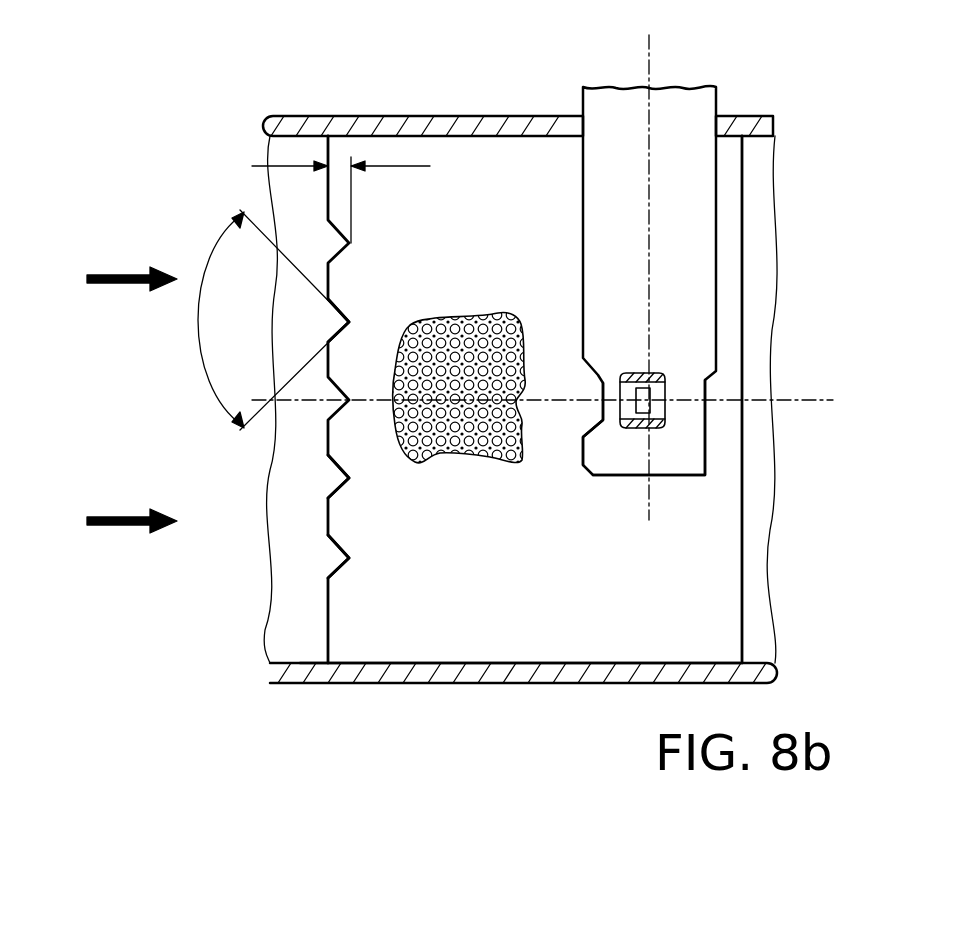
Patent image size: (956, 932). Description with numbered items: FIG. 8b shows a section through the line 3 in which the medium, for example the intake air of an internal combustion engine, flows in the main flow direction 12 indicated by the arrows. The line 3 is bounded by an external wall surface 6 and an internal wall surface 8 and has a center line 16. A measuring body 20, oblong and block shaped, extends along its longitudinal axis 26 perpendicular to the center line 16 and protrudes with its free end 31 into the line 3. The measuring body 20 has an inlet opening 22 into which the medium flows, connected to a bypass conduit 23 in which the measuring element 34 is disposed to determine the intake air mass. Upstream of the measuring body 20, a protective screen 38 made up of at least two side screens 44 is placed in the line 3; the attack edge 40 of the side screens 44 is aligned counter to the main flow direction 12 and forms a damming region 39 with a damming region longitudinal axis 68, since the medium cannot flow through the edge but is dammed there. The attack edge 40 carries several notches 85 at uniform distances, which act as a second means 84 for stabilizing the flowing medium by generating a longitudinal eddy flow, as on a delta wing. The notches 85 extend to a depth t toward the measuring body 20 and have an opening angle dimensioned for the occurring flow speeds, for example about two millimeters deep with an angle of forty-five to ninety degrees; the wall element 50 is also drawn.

The line 3 is at (391, 636).
The external wall surface 6 is at (453, 683).
The internal wall surface 8 is at (572, 668).
The main flow direction 12 is at (113, 275).
The center line 16 is at (816, 400).
The measuring body 20 is at (611, 130).
The inlet opening 22 is at (596, 414).
The bypass conduit 23 is at (657, 412).
The longitudinal axis 26 is at (652, 57).
The free end 31 is at (692, 477).
The measuring element 34 is at (645, 408).
The protective screen 38 is at (459, 439).
The side screen 44 is at (450, 437).
The damming region 39 is at (216, 399).
The attack edge 40 is at (216, 399).
The damming region longitudinal axis 68 is at (328, 608).
The side wall 50 is at (765, 190).
The second means for stabilizing the flowing medium 84 is at (240, 448).
The notch 85 is at (328, 410).
The depth t is at (340, 162).